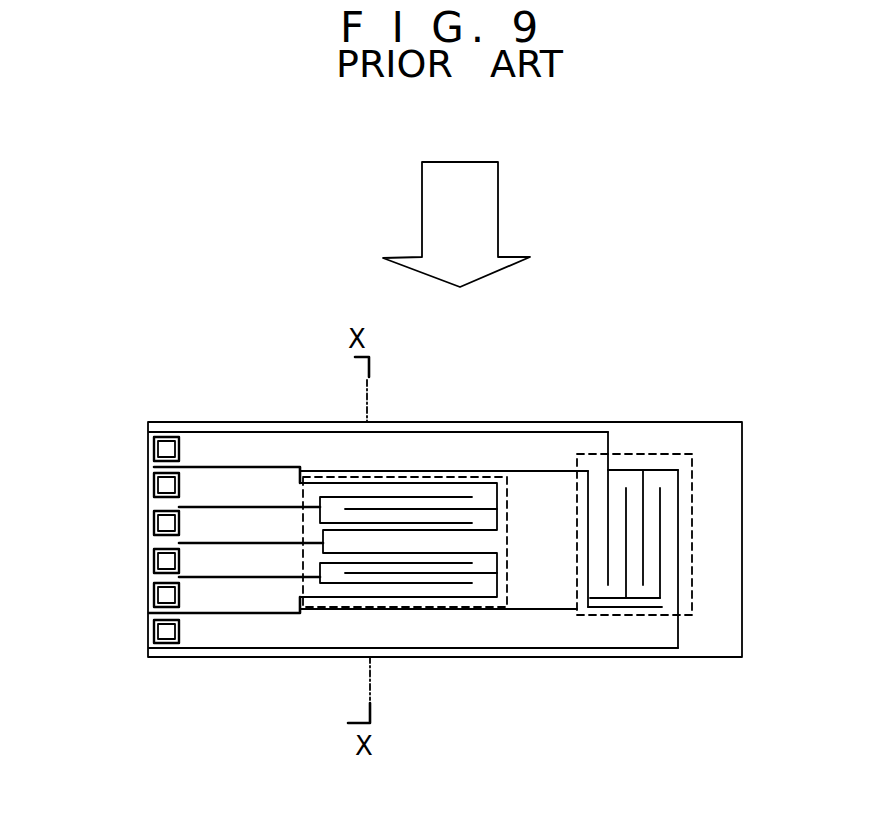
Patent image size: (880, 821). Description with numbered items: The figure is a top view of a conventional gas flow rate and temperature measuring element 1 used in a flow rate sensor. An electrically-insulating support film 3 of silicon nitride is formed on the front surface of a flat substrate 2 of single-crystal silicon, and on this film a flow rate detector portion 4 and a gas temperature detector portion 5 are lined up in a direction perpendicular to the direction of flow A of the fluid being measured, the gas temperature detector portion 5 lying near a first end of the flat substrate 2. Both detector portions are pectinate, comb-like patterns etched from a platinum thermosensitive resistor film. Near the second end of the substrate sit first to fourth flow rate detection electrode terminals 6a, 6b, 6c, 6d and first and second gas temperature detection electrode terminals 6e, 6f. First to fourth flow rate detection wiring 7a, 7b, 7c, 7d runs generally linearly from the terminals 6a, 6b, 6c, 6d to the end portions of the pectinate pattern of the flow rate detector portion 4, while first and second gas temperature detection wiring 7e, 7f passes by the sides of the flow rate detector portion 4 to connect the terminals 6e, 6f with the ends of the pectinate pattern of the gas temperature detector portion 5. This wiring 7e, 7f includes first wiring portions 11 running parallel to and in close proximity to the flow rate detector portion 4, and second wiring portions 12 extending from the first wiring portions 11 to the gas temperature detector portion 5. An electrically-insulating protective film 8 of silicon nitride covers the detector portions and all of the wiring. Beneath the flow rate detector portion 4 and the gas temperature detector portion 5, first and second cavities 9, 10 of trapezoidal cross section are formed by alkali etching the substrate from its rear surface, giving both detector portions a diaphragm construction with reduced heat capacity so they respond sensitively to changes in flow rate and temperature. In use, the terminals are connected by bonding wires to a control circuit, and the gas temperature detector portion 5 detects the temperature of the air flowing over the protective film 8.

The gas flow rate and temperature measuring element 1 is at (185, 335).
The flat substrate 2 is at (449, 568).
The electrically-insulating support film 3 is at (449, 568).
The electrically-insulating protective film 8 is at (707, 651).
The flow rate detector portion 4 is at (462, 490).
The gas temperature detector portion 5 is at (662, 473).
The first flow rate detection electrode terminal 6a is at (160, 487).
The second flow rate detection electrode terminal 6b is at (160, 527).
The third flow rate detection electrode terminal 6c is at (160, 566).
The fourth flow rate detection electrode terminal 6d is at (160, 598).
The first gas temperature detection electrode terminal 6e is at (160, 450).
The second gas temperature detection electrode terminal 6f is at (160, 630).
The first flow rate detection wiring 7a is at (250, 478).
The second flow rate detection wiring 7b is at (211, 521).
The third flow rate detection wiring 7c is at (207, 568).
The fourth flow rate detection wiring 7d is at (243, 597).
The first gas temperature detection wiring 7e is at (293, 441).
The second gas temperature detection wiring 7f is at (300, 634).
The first cavity 9 is at (505, 476).
The second cavity 10 is at (690, 455).
The first wiring portions 11 is at (418, 450).
The second wiring portions 12 is at (563, 443).
The direction of flow A is at (507, 212).